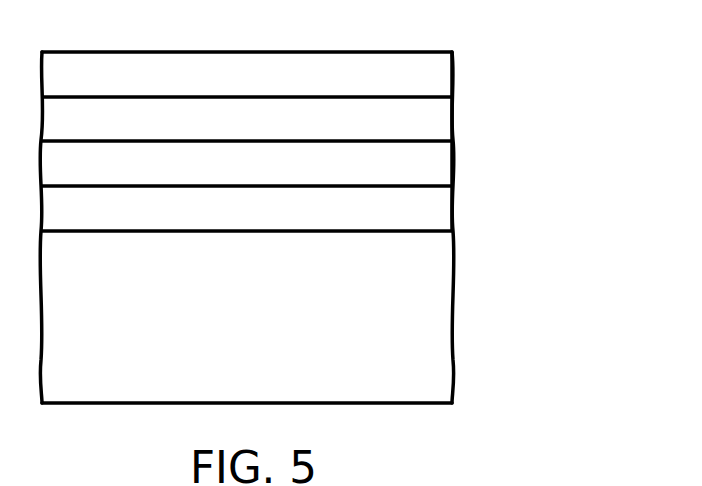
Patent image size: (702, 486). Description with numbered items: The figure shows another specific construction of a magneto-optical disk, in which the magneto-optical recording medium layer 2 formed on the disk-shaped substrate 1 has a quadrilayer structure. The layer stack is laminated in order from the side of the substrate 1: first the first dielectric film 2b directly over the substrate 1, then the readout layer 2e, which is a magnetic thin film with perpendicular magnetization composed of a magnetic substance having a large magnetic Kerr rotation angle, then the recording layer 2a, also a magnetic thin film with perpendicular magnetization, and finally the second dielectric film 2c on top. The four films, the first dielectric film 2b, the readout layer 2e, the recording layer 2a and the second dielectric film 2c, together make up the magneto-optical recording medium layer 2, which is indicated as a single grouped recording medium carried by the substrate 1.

The substrate 1 is at (446, 331).
The magneto-optical recording medium layer 2 is at (560, 47).
The recording layer 2a is at (447, 122).
The first dielectric film 2b is at (447, 206).
The second dielectric film 2c is at (447, 86).
The readout layer 2e is at (447, 166).